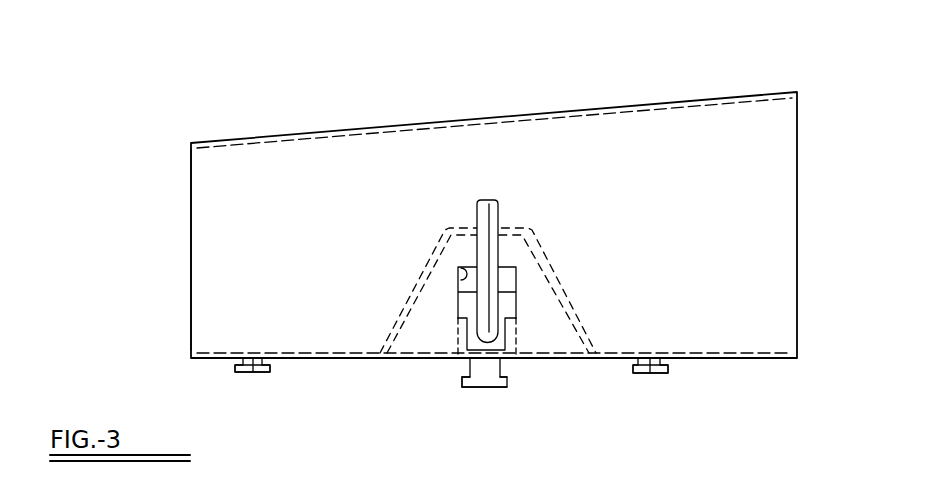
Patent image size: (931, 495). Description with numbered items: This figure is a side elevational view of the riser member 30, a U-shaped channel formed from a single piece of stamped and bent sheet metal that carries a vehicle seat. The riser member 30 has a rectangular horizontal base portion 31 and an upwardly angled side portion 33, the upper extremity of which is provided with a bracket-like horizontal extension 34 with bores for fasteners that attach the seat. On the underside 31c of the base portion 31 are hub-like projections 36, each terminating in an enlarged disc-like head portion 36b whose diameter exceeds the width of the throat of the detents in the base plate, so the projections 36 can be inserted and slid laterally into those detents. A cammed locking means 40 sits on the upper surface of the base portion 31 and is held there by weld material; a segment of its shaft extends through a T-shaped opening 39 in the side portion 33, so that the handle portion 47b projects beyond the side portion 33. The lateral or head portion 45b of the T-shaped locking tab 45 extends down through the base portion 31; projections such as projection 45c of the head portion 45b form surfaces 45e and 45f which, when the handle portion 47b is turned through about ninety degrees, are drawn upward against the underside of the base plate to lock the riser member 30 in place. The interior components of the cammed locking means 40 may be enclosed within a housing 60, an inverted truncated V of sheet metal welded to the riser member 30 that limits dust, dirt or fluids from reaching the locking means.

The riser member 30 is at (255, 130).
The horizontal base portion 31 is at (773, 362).
The underside of base portion 31c is at (738, 362).
The side portion 33 is at (210, 192).
The bracket-like horizontal extension 34 is at (662, 100).
The hub-like projection 36 is at (264, 379).
The disc-like head portion 36b is at (242, 372).
The T-shaped opening 39 is at (459, 268).
The cammed locking means 40 is at (508, 307).
The locking tab 45 is at (480, 394).
The head portion of locking tab 45b is at (488, 389).
The projection of head portion 45c is at (463, 386).
The contact surface 45e is at (463, 373).
The contact surface 45f is at (505, 374).
The handle portion of shaft 47b is at (499, 206).
The housing 60 is at (537, 245).